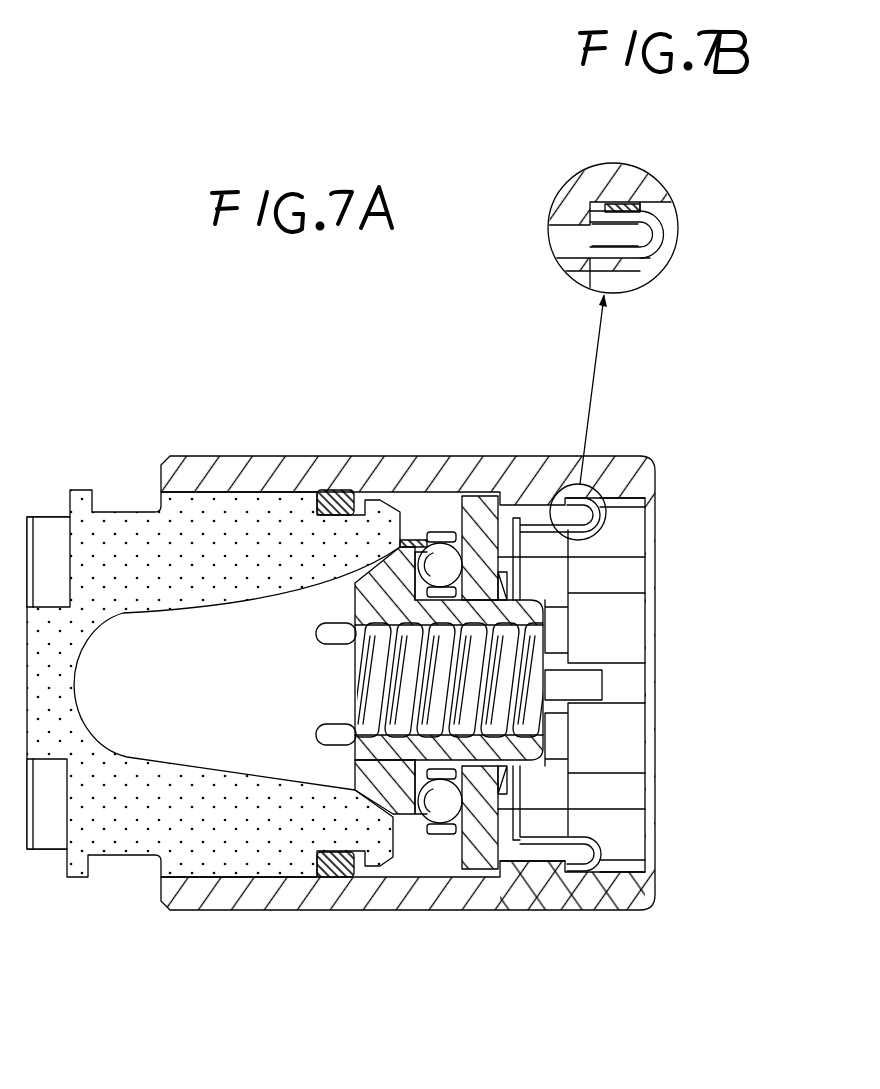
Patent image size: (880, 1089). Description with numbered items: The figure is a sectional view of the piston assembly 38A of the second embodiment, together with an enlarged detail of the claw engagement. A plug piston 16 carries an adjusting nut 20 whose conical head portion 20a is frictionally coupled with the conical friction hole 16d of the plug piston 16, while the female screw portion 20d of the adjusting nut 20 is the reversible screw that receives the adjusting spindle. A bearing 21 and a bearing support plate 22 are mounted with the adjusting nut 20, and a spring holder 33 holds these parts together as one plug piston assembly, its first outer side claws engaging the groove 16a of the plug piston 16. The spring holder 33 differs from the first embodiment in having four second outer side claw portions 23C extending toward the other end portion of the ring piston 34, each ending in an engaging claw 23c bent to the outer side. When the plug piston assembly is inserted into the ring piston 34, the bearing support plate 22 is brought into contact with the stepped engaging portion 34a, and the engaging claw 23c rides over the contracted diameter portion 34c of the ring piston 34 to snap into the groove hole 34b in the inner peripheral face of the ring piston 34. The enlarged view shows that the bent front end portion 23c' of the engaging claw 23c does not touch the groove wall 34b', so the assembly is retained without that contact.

In FIG. 7A, the piston assembly 38A is at (240, 423).
In FIG. 7A, the ring piston 34 is at (390, 457).
In FIG. 7A, the stepped engaging portion 34a is at (480, 497).
In FIG. 7A, the groove hole 34b is at (669, 685).
In FIG. 7B, the groove hole 34b is at (700, 222).
In FIG. 7B, the groove wall 34b' is at (657, 278).
In FIG. 7A, the contracted diameter portion 34c is at (527, 880).
In FIG. 7A, the spring holder 33 is at (545, 865).
In FIG. 7A, the plug piston 16 is at (83, 814).
In FIG. 7A, the groove 16a is at (360, 866).
In FIG. 7A, the conical friction hole 16d is at (420, 537).
In FIG. 7A, the adjusting nut 20 is at (348, 594).
In FIG. 7A, the conical head portion 20a is at (373, 770).
In FIG. 7A, the female screw portion 20d is at (545, 732).
In FIG. 7A, the bearing 21 is at (438, 815).
In FIG. 7A, the bearing support plate 22 is at (477, 848).
In FIG. 7A, the engaging claw 23c is at (626, 447).
In FIG. 7B, the engaging claw 23c is at (674, 241).
In FIG. 7A, the second outer side claw portion 23C is at (568, 533).
In FIG. 7B, the bent front end portion 23c' is at (651, 152).